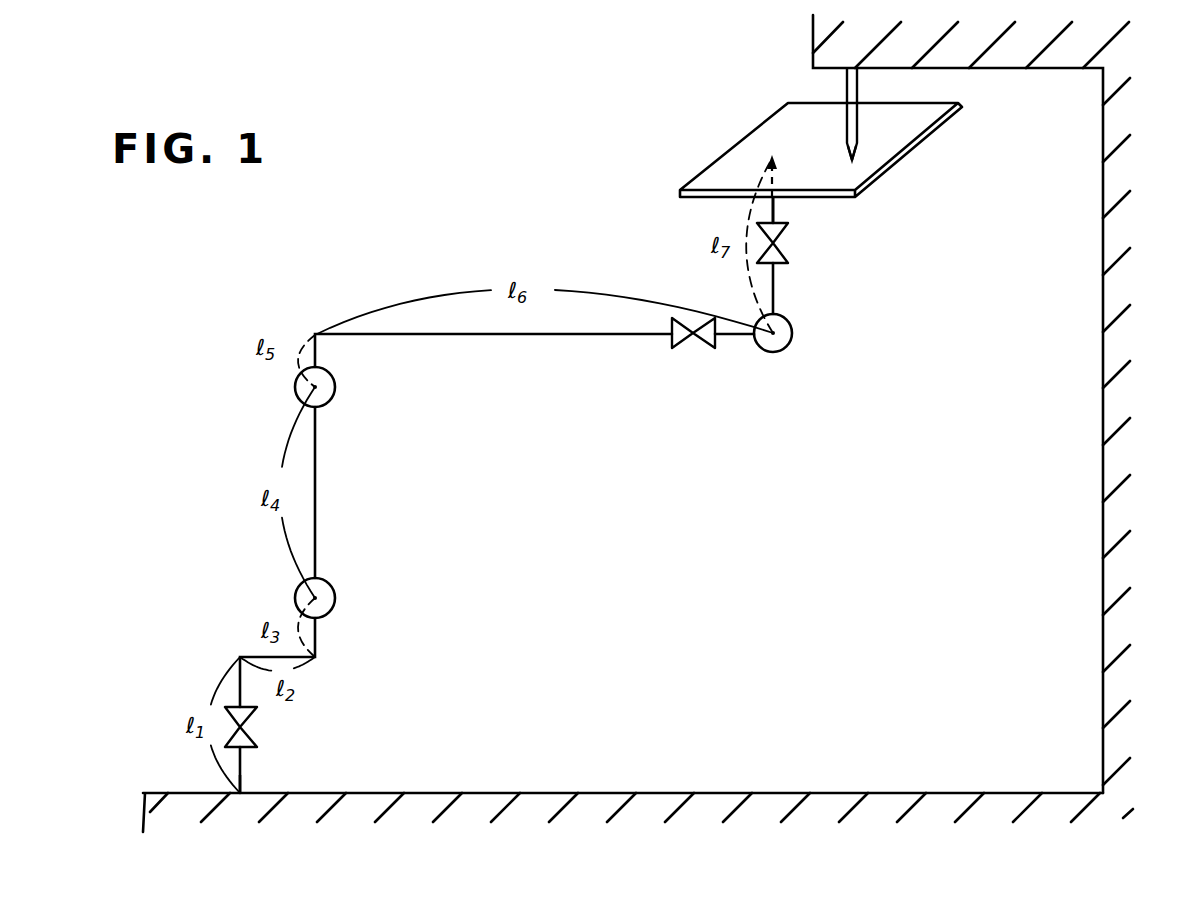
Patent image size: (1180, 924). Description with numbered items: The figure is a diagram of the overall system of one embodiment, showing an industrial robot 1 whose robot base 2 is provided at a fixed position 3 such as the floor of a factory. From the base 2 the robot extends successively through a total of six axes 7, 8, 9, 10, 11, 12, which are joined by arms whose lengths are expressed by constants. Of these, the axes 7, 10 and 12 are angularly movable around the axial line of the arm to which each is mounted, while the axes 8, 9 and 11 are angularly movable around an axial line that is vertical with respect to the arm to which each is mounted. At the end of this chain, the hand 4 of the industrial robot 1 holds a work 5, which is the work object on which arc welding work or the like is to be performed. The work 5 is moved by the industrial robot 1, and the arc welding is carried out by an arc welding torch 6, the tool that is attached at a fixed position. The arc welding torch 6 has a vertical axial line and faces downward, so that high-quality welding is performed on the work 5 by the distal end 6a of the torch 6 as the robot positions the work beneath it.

The industrial robot 1 is at (270, 418).
The robot base 2 is at (246, 790).
The fixed position 3 is at (712, 790).
The hand 4 is at (775, 212).
The work 5 is at (732, 165).
The arc welding torch 6 is at (845, 85).
The distal end 6a is at (855, 164).
The axis 7 is at (250, 716).
The axis 8 is at (337, 598).
The axis 9 is at (337, 387).
The axis 10 is at (704, 346).
The axis 11 is at (793, 333).
The axis 12 is at (783, 250).